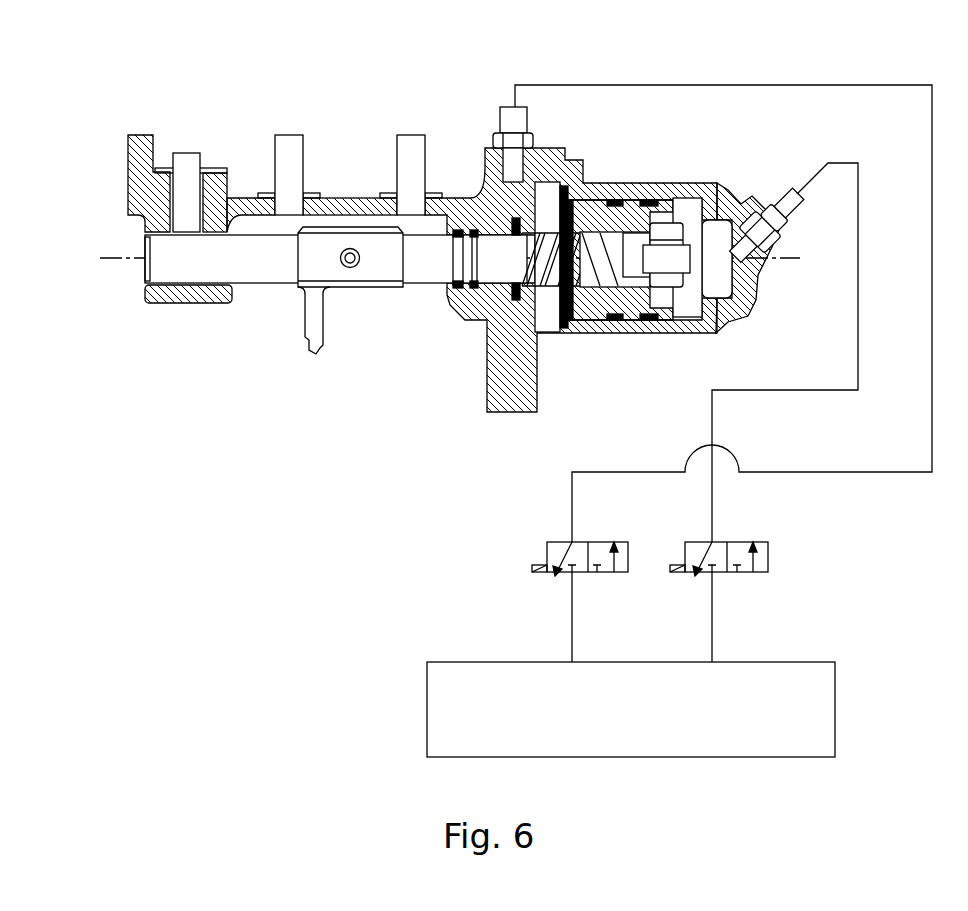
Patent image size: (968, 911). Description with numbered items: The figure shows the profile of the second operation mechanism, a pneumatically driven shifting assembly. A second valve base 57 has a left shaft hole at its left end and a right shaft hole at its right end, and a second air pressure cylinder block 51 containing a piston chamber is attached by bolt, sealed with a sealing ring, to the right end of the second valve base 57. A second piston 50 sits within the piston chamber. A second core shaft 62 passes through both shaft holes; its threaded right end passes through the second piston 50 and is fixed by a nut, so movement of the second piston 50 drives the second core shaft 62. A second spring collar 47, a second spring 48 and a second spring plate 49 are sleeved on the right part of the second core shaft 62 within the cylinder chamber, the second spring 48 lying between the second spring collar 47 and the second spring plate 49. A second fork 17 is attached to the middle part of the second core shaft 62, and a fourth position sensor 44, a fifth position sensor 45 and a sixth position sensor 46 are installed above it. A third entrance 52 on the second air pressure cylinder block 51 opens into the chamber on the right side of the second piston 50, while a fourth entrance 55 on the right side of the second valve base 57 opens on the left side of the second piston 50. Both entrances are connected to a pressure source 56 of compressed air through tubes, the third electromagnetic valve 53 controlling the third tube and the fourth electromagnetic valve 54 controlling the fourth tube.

The second fork 17 is at (317, 353).
The fourth position sensor 44 is at (186, 162).
The fifth position sensor 45 is at (285, 157).
The sixth position sensor 46 is at (405, 150).
The second spring collar 47 is at (487, 175).
The second spring 48 is at (538, 220).
The second spring plate 49 is at (582, 185).
The second piston 50 is at (673, 198).
The second air pressure cylinder block 51 is at (728, 197).
The third entrance 52 is at (788, 187).
The third electromagnetic valve 53 is at (760, 558).
The fourth electromagnetic valve 54 is at (545, 565).
The fourth entrance 55 is at (510, 112).
The pressure source 56 is at (820, 698).
The second valve base 57 is at (152, 303).
The second core shaft 62 is at (265, 272).